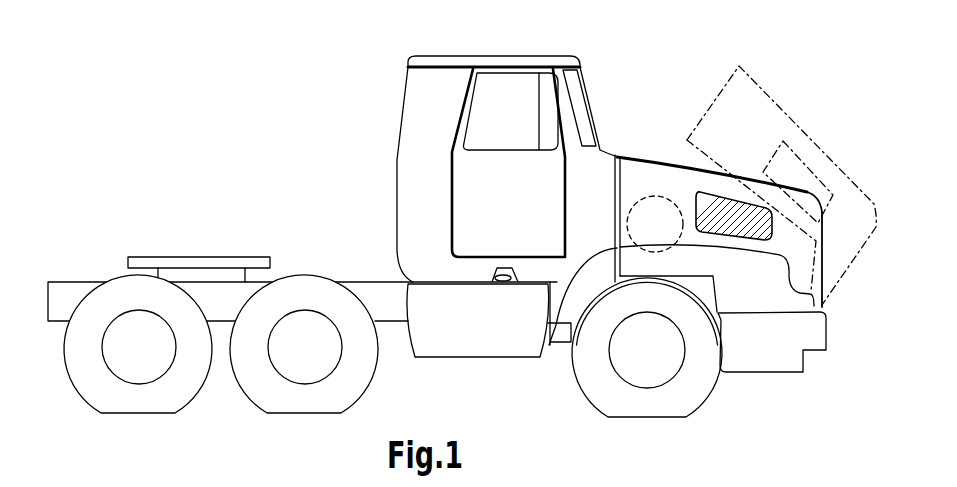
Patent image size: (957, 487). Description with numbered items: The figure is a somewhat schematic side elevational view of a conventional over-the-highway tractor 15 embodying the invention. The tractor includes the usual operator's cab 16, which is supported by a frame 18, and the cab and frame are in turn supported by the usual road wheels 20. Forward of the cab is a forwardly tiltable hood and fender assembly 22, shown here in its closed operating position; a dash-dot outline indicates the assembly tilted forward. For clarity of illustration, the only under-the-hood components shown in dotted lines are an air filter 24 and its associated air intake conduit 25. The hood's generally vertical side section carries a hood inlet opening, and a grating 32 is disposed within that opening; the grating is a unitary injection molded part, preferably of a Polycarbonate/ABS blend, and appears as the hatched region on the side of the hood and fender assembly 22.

The tractor 15 is at (539, 371).
The operator's cab 16 is at (494, 56).
The frame 18 is at (385, 293).
The road wheels 20 is at (253, 378).
The hood and fender assembly 22 is at (641, 168).
The air filter 24 is at (647, 215).
The air intake conduit 25 is at (695, 238).
The grating 32 is at (733, 218).